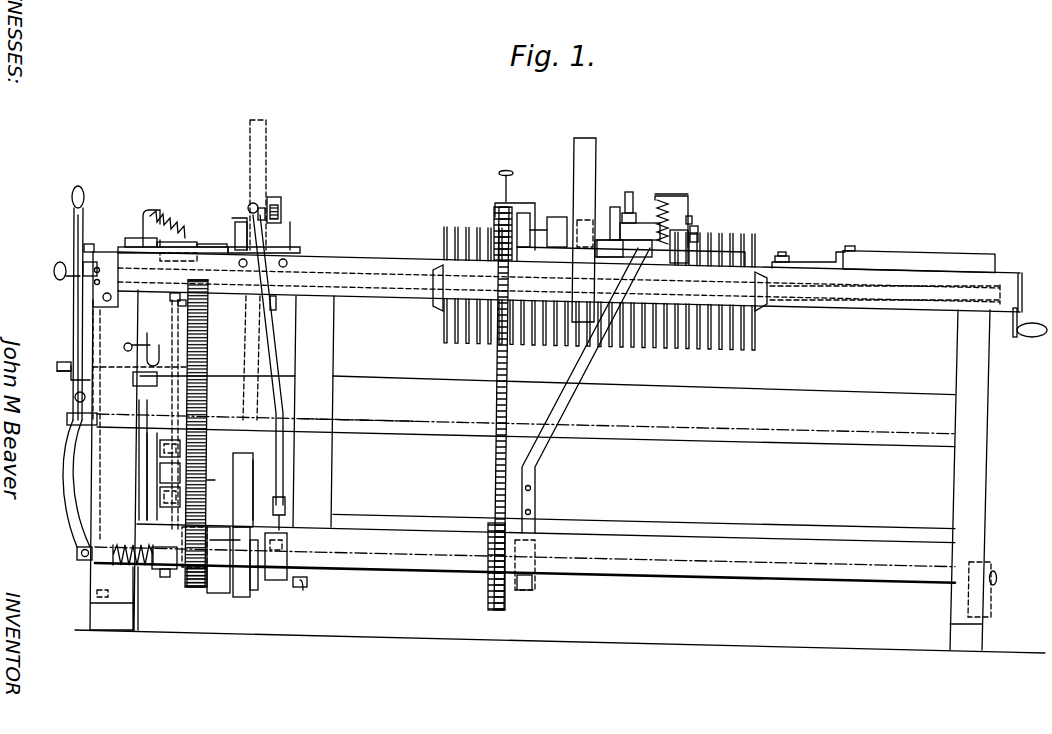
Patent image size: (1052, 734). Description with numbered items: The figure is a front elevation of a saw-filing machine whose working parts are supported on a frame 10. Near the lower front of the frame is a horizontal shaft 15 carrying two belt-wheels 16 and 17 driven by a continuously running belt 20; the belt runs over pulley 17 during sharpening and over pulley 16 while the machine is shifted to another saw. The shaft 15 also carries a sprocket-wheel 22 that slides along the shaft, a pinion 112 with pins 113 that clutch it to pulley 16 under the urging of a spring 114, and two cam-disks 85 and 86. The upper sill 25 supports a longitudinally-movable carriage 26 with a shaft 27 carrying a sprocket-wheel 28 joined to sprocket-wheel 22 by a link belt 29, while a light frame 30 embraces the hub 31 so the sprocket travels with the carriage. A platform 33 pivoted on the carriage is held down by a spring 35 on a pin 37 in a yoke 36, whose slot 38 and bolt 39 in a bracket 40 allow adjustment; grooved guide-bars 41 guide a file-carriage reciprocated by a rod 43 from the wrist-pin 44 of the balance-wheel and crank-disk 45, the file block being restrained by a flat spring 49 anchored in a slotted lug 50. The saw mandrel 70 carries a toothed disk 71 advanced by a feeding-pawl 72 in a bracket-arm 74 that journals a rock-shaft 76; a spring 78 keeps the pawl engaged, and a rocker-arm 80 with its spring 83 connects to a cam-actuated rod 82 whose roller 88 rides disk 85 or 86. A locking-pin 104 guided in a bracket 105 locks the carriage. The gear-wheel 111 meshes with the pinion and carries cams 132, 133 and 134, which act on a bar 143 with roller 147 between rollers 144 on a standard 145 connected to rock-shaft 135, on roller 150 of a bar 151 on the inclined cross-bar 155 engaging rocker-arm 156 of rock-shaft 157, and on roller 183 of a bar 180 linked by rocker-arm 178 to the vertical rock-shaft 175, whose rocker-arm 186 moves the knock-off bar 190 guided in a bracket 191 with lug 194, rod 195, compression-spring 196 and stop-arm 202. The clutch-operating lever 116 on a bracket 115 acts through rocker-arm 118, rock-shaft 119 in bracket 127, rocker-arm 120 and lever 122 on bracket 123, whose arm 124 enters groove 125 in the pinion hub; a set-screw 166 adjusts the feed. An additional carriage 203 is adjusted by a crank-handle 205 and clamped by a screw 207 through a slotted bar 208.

The frame 10 is at (960, 478).
The shaft 15 is at (403, 568).
The belt-wheel 16 is at (220, 586).
The belt-wheel 17 is at (257, 590).
The belt 20 is at (241, 466).
The sprocket-wheel 22 is at (488, 590).
The longitudinal bar 25 is at (382, 262).
The carriage 26 is at (560, 255).
The shaft 27 is at (547, 220).
The sprocket-wheel 28 is at (497, 213).
The link belt 29 is at (494, 453).
The light frame 30 is at (543, 448).
The hub 31 is at (527, 587).
The platform 33 is at (640, 222).
The spring 35 is at (690, 218).
The yoke-shaped frame 36 is at (672, 205).
The bar or pin 37 is at (668, 195).
The vertically-elongated slot 38 is at (698, 222).
The bolt 39 is at (698, 230).
The bracket 40 is at (680, 255).
The grooved guide-bars 41 is at (583, 213).
The rod 43 is at (617, 205).
The wrist-pin 44 is at (605, 257).
The combined balance-wheel and crank-disk 45 is at (593, 155).
The flat spring 49 is at (630, 192).
The slotted lug 50 is at (635, 199).
The saw-supporting mandrel 70 is at (827, 298).
The toothed disk 71 is at (273, 306).
The feeding-pawl 72 is at (282, 203).
The bracket-arm 74 is at (292, 238).
The rock-shaft 76 is at (240, 223).
The spring 78 is at (281, 216).
The rocker-arm 80 is at (249, 204).
The cam-actuated rod 82 is at (279, 358).
The spring 83 is at (262, 207).
The cam-disk 85 is at (305, 590).
The cam-disk 86 is at (277, 581).
The antifriction-roller 88 is at (287, 510).
The locking-pin 104 is at (498, 175).
The bracket 105 is at (527, 204).
The gear-wheel 111 is at (234, 468).
The pinion 112 is at (200, 590).
The pins 113 is at (213, 540).
The spring 114 is at (138, 606).
The bracket 115 is at (70, 424).
The clutch-operating lever 116 is at (72, 214).
The rocker-arm 118 is at (77, 290).
The rock-shaft 119 is at (80, 317).
The rocker-arm 120 is at (78, 268).
The lever 122 is at (68, 484).
The bracket 123 is at (75, 397).
The arm 124 is at (87, 562).
The groove 125 is at (170, 569).
The bracket 127 is at (78, 252).
The cam 132 is at (170, 297).
The cam 133 is at (205, 318).
The cam 134 is at (203, 365).
The rock-shaft 135 is at (407, 427).
The bar 143 is at (145, 487).
The antifriction-rollers 144 is at (148, 507).
The standard 145 is at (133, 622).
The antifriction-roller 147 is at (158, 452).
The antifriction-roller 150 is at (206, 487).
The bar 151 is at (136, 382).
The inclined cross-bar 155 is at (147, 455).
The rocker-arm 156 is at (147, 337).
The rock-shaft 157 is at (128, 347).
The set-screw 166 is at (53, 270).
The rock-shaft 175 is at (95, 340).
The rocker-arm 178 is at (68, 378).
The bar 180 is at (57, 366).
The antifriction-roller 183 is at (205, 333).
The rocker-arm 186 is at (135, 243).
The knock-off bar 190 is at (180, 243).
The block or bracket 191 is at (197, 245).
The lug 194 is at (147, 212).
The rod 195 is at (173, 257).
The compression-spring 196 is at (170, 223).
The stop-arm 202 is at (177, 304).
The additional carriage 203 is at (888, 262).
The crank-handle 205 is at (1016, 335).
The screw 207 is at (783, 255).
The slotted bar 208 is at (820, 262).